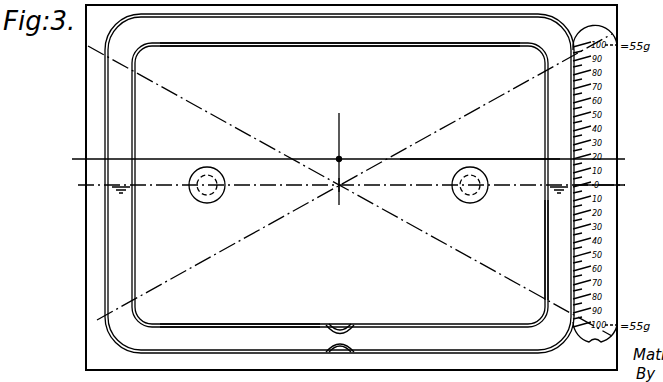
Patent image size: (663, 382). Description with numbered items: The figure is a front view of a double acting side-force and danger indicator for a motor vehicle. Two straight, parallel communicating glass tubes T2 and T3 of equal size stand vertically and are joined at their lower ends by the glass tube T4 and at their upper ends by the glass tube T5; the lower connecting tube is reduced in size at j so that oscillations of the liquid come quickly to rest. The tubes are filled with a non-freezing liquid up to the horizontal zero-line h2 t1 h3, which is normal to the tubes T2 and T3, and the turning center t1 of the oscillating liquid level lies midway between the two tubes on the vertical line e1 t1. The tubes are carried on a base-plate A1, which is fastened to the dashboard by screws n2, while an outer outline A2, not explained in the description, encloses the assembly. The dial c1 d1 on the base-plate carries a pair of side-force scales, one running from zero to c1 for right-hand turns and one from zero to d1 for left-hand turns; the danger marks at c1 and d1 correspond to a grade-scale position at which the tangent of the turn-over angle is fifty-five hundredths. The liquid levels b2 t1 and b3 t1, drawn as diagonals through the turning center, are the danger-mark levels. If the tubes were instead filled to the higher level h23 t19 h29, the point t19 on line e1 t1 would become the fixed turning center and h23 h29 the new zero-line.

The base-plate A1 is at (91, 82).
The outer tank wall A2 is at (339, 198).
The communicating glass tube T2 is at (134, 250).
The communicating glass tube T3 is at (546, 243).
The lower connecting glass tube T4 is at (242, 326).
The upper connecting glass tube T5 is at (236, 45).
The zero-line level point h2 is at (340, 183).
The zero-line level point h3 is at (610, 183).
The alternative zero-line level point h23 is at (160, 152).
The alternative zero-line level point h29 is at (506, 159).
The danger-mark liquid level b2 is at (505, 277).
The danger-mark liquid level b3 is at (506, 93).
The screw n2 is at (476, 220).
The normal line e1 is at (340, 148).
The alternative turning center t19 is at (342, 159).
The turning center t1 is at (339, 190).
The reduced tube section j is at (343, 332).
The side-force scale danger mark d1 is at (595, 26).
The side-force scale danger mark c1 is at (595, 346).